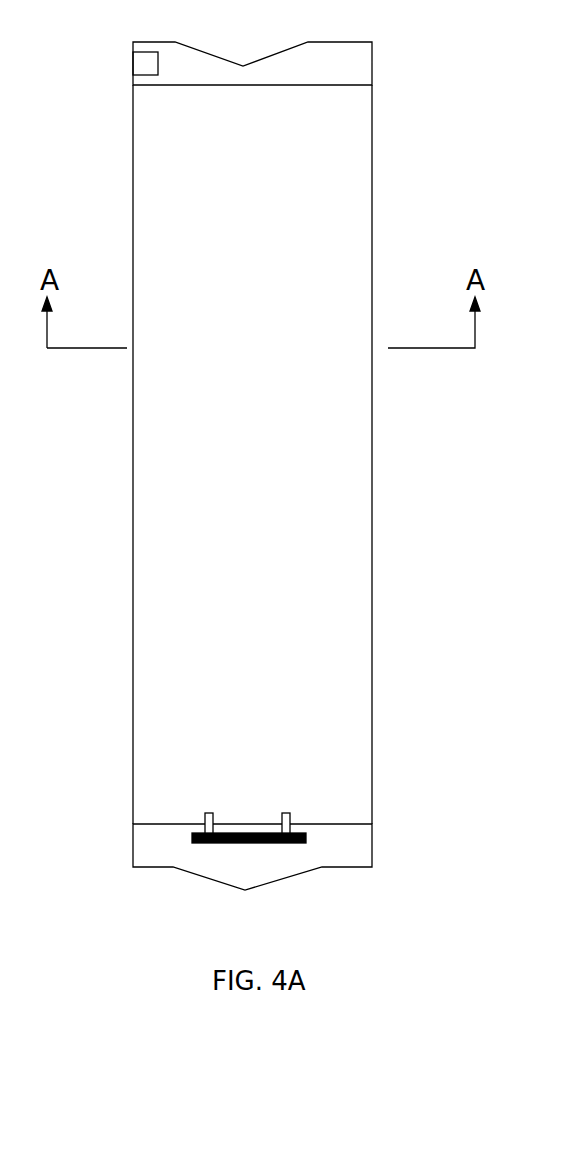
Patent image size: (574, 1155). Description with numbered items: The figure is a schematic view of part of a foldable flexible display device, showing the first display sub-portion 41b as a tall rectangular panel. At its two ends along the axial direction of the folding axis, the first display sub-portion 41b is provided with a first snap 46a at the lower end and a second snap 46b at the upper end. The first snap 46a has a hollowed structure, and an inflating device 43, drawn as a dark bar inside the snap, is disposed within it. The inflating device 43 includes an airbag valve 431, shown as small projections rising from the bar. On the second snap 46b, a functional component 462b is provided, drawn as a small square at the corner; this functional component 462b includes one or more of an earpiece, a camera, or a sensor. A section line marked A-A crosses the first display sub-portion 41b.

The first display sub-portion 41b is at (155, 428).
The second snap 46b is at (355, 63).
The functional component 462b is at (146, 68).
The first snap 46a is at (330, 840).
The inflating device 43 is at (272, 845).
The airbag valve 431 is at (192, 826).